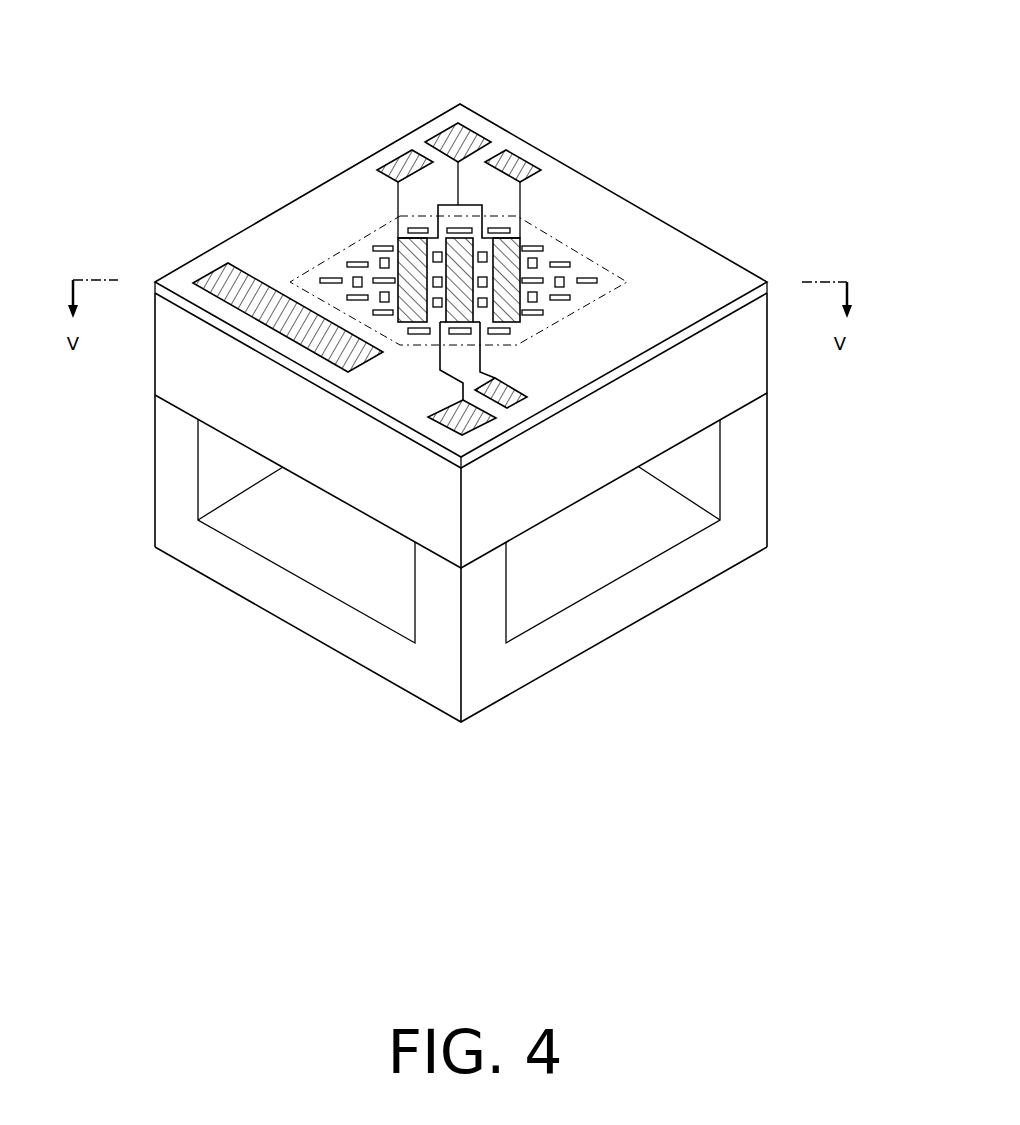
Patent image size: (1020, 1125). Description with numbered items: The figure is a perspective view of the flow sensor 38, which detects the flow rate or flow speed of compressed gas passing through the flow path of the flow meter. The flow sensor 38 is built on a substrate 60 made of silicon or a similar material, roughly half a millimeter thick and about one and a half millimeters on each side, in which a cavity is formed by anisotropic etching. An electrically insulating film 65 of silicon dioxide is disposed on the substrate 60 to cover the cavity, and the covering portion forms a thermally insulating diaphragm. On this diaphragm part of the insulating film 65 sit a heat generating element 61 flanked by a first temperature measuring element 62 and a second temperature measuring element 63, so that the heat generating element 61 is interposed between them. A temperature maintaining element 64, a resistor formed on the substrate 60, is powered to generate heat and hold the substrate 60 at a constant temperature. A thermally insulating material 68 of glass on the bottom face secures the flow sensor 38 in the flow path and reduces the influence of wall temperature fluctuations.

The flow sensor 38 is at (519, 363).
The substrate 60 is at (687, 440).
The heat generating element 61 is at (444, 323).
The first temperature measuring element 62 is at (402, 242).
The second temperature measuring element 63 is at (521, 323).
The temperature maintaining element 64 is at (222, 280).
The insulating film 65 is at (767, 282).
The thermally insulating material 68 is at (768, 510).